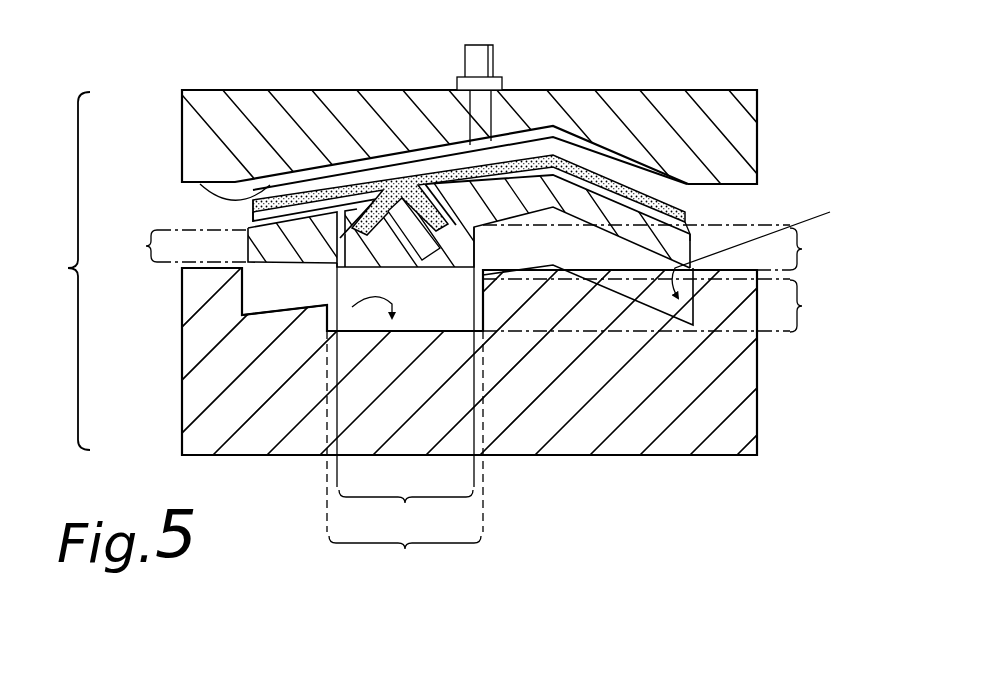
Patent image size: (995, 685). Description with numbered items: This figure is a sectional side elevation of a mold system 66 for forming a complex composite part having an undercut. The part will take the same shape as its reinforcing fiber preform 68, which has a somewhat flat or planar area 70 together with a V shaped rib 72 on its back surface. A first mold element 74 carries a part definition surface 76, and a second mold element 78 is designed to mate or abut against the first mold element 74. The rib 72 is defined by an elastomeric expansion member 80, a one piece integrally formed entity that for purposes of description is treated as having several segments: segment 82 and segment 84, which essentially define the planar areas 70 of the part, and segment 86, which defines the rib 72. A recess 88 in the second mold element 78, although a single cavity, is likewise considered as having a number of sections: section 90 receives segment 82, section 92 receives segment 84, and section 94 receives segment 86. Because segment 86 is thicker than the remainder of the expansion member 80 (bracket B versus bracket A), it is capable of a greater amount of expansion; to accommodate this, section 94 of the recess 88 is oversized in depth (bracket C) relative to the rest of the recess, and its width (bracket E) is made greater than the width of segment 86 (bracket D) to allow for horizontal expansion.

The mold system 66 is at (818, 98).
The fiber preform 68 is at (481, 141).
The planar area 70 is at (505, 163).
The V shaped rib 72 is at (253, 219).
The first mold element 74 is at (760, 92).
The part definition surface 76 is at (183, 162).
The second mold element 78 is at (203, 373).
The elastomeric expansion member 80 is at (690, 241).
The segment 82 is at (587, 210).
The segment 84 is at (253, 226).
The segment 86 is at (424, 276).
The recess 88 is at (588, 282).
The section 90 is at (767, 243).
The section 92 is at (268, 290).
The section 94 is at (335, 332).